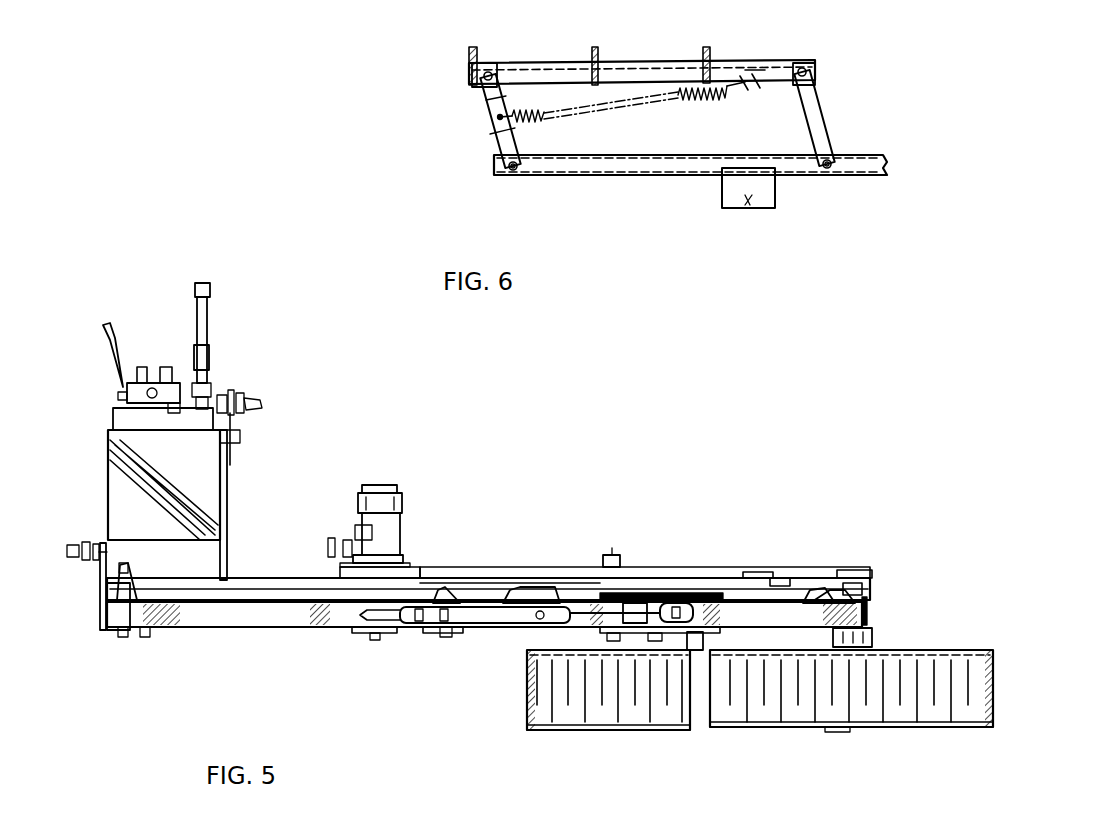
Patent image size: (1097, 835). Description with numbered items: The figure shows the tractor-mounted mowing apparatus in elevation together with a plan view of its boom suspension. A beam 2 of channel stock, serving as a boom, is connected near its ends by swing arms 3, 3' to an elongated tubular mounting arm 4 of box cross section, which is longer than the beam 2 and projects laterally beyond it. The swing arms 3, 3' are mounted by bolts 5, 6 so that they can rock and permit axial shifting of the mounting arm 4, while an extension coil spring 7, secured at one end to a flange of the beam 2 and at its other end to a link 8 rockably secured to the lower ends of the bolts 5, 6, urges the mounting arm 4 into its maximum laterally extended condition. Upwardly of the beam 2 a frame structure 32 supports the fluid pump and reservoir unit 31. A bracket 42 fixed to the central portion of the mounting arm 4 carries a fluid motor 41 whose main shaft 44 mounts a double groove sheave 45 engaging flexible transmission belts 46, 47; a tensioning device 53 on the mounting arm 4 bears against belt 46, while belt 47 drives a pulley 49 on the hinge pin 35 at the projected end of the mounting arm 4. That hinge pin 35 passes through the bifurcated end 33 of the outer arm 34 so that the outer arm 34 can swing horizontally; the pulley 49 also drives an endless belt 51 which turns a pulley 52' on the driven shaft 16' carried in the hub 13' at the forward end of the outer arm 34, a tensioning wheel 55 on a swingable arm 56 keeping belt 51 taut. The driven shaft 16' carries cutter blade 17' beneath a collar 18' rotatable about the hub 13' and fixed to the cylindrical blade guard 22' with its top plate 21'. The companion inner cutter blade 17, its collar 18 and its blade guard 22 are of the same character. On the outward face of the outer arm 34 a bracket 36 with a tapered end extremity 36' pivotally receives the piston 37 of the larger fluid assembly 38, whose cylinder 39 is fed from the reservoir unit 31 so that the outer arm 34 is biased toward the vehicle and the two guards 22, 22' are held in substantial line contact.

In FIG. 6, the beam 2 is at (627, 62).
In FIG. 5, the beam 2 is at (263, 577).
In FIG. 6, the swing arm 3 is at (839, 118).
In FIG. 5, the swing arm 3 is at (501, 566).
In FIG. 6, the swing arm 3' is at (463, 121).
In FIG. 5, the swing arm 3' is at (252, 593).
In FIG. 6, the mounting arm 4 is at (642, 175).
In FIG. 5, the mounting arm 4 is at (258, 627).
In FIG. 6, the bolt 5 is at (483, 75).
In FIG. 5, the bolt 5 is at (123, 608).
In FIG. 6, the bolt 6 is at (510, 170).
In FIG. 5, the bolt 6 is at (147, 638).
In FIG. 6, the extension coil spring 7 is at (537, 120).
In FIG. 6, the link 8 is at (488, 140).
In FIG. 5, the link 8 is at (133, 642).
In FIG. 5, the hub 13' is at (908, 602).
In FIG. 5, the driven shaft 16' is at (902, 572).
In FIG. 5, the rotary cutter blade 17 is at (599, 768).
In FIG. 5, the cutter blade 17' is at (904, 744).
In FIG. 5, the collar 18 is at (616, 720).
In FIG. 5, the collar 18' is at (893, 626).
In FIG. 5, the top plate 21' is at (879, 665).
In FIG. 5, the cylindrical blade guard 22 is at (584, 741).
In FIG. 5, the cylindrical blade guard 22' is at (889, 692).
In FIG. 5, the fluid pump and reservoir unit 31 is at (107, 423).
In FIG. 5, the frame structure 32 is at (230, 477).
In FIG. 5, the bifurcated end 33 is at (607, 633).
In FIG. 5, the outer arm 34 is at (810, 603).
In FIG. 5, the hinge pin 35 is at (578, 625).
In FIG. 5, the bracket 36 is at (682, 684).
In FIG. 5, the tapered end extremity 36' is at (671, 714).
In FIG. 5, the piston 37 is at (528, 697).
In FIG. 5, the fluid assembly 38 is at (532, 625).
In FIG. 5, the cylinder 39 is at (508, 630).
In FIG. 5, the fluid motor 41 is at (380, 485).
In FIG. 6, the bracket 42 is at (722, 188).
In FIG. 5, the bracket 42 is at (407, 560).
In FIG. 5, the main shaft 44 is at (380, 637).
In FIG. 5, the double groove sheave 45 is at (413, 567).
In FIG. 5, the flexible transmission belt 46 is at (483, 582).
In FIG. 5, the flexible transmission belt 47 is at (640, 577).
In FIG. 5, the pulley 49 is at (632, 567).
In FIG. 5, the endless belt 51 is at (817, 577).
In FIG. 5, the pulley 52' is at (891, 547).
In FIG. 5, the tensioning device 53 is at (550, 570).
In FIG. 5, the tensioning wheel 55 is at (773, 578).
In FIG. 5, the arm 56 is at (733, 583).